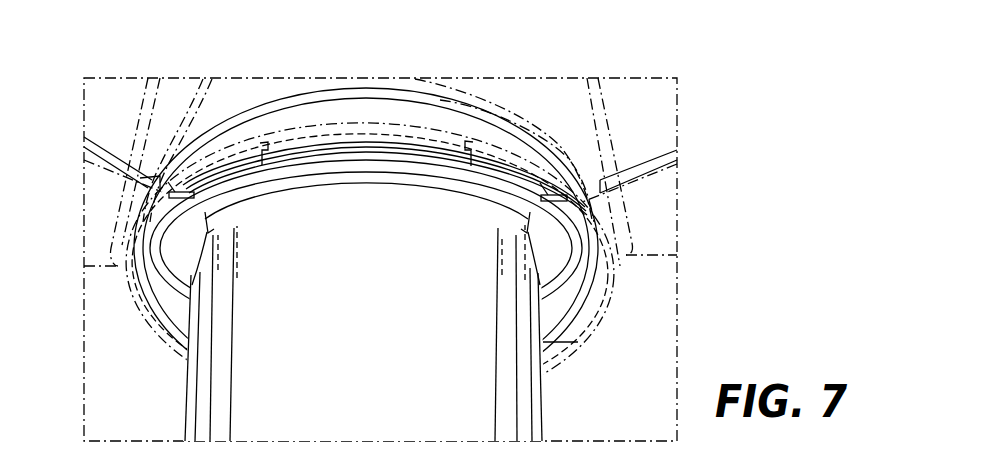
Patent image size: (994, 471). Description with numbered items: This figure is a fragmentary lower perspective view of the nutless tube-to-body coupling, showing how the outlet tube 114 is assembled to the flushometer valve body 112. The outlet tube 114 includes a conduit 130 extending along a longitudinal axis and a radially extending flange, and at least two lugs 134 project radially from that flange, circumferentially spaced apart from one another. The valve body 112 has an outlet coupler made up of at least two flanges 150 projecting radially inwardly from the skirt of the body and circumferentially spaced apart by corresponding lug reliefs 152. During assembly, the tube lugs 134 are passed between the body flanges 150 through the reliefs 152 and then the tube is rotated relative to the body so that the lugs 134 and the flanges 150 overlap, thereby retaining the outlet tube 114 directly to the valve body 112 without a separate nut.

The flushometer valve body 112 is at (702, 123).
The outlet tube 114 is at (138, 417).
The conduit 130 is at (543, 422).
The lug 134 is at (168, 220).
The flange 150 is at (156, 328).
The lug relief 152 is at (369, 136).